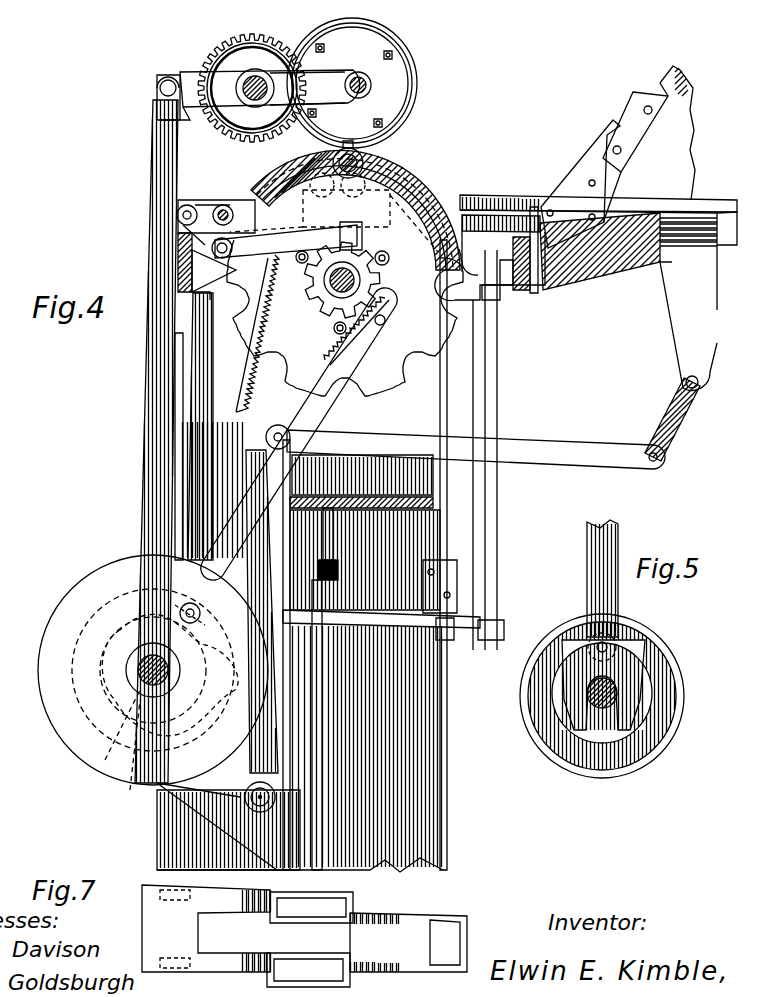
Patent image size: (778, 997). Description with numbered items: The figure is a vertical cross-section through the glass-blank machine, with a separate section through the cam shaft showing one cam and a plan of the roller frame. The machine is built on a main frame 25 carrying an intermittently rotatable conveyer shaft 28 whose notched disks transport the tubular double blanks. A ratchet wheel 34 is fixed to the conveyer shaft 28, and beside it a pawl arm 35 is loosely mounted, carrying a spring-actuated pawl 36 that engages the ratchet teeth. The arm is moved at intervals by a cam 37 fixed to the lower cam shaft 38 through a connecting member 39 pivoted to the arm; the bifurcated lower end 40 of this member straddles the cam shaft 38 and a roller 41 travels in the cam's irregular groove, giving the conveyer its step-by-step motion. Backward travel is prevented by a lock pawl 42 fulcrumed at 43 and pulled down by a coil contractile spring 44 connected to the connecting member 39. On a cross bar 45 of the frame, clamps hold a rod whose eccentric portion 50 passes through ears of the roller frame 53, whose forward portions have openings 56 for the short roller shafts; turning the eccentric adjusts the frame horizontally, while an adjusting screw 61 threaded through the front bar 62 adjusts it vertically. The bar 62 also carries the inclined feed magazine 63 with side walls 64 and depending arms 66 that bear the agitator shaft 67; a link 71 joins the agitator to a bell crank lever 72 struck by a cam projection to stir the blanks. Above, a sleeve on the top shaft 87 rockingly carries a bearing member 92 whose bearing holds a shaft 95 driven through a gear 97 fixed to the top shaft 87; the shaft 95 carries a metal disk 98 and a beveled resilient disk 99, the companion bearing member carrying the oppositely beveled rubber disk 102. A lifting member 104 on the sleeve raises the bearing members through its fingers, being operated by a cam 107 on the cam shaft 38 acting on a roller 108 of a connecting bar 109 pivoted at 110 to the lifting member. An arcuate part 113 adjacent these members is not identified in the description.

In FIG. 4, the gear 97 is at (250, 33).
In FIG. 4, the top shaft 87 is at (256, 74).
In FIG. 4, the shaft 95 is at (358, 72).
In FIG. 4, the resilient disk or ring 99 is at (410, 52).
In FIG. 4, the metal disk 98 is at (405, 70).
In FIG. 4, the rubber disk or ring 102 is at (415, 95).
In FIG. 4, the pivot 110 is at (160, 86).
In FIG. 4, the lifting member 104 is at (260, 95).
In FIG. 4, the bearing member 92 is at (307, 88).
In FIG. 4, the connecting bar 109 is at (153, 180).
In FIG. 5, the connecting bar 109 is at (589, 556).
In FIG. 4, the feed magazine 63 is at (188, 204).
In FIG. 4, the eccentric portion 50 is at (224, 204).
In FIG. 4, the cross bar 45 is at (364, 161).
In FIG. 4, the curved sector 113 is at (405, 180).
In FIG. 4, the lock pawl 42 is at (308, 215).
In FIG. 4, the fulcrum 43 is at (207, 266).
In FIG. 4, the conveyer shaft 28 is at (330, 291).
In FIG. 4, the ratchet wheel 34 is at (390, 272).
In FIG. 4, the spring-actuated pawl 36 is at (396, 292).
In FIG. 5, the spring-actuated pawl 36 is at (602, 709).
In FIG. 4, the pawl arm 35 is at (386, 318).
In FIG. 4, the coil contractile spring 44 is at (237, 407).
In FIG. 4, the connecting member 39 is at (330, 387).
In FIG. 4, the main frame 25 is at (424, 398).
In FIG. 4, the adjusting screw 61 is at (498, 300).
In FIG. 4, the bar 62 is at (528, 296).
In FIG. 4, the side walls 64 is at (649, 144).
In FIG. 4, the depending arms 66 is at (675, 310).
In FIG. 4, the agitator shaft 67 is at (685, 382).
In FIG. 4, the link 71 is at (665, 418).
In FIG. 4, the bell crank lever 72 is at (584, 447).
In FIG. 4, the cam 37 is at (128, 590).
In FIG. 4, the roller 41 is at (196, 599).
In FIG. 4, the lower cam shaft 38 is at (162, 690).
In FIG. 4, the bifurcated lower end 40 is at (88, 745).
In FIG. 5, the roller 108 is at (595, 640).
In FIG. 5, the cam 107 is at (668, 655).
In FIG. 7, the roller frame 53 is at (380, 932).
In FIG. 7, the openings 56 is at (318, 906).